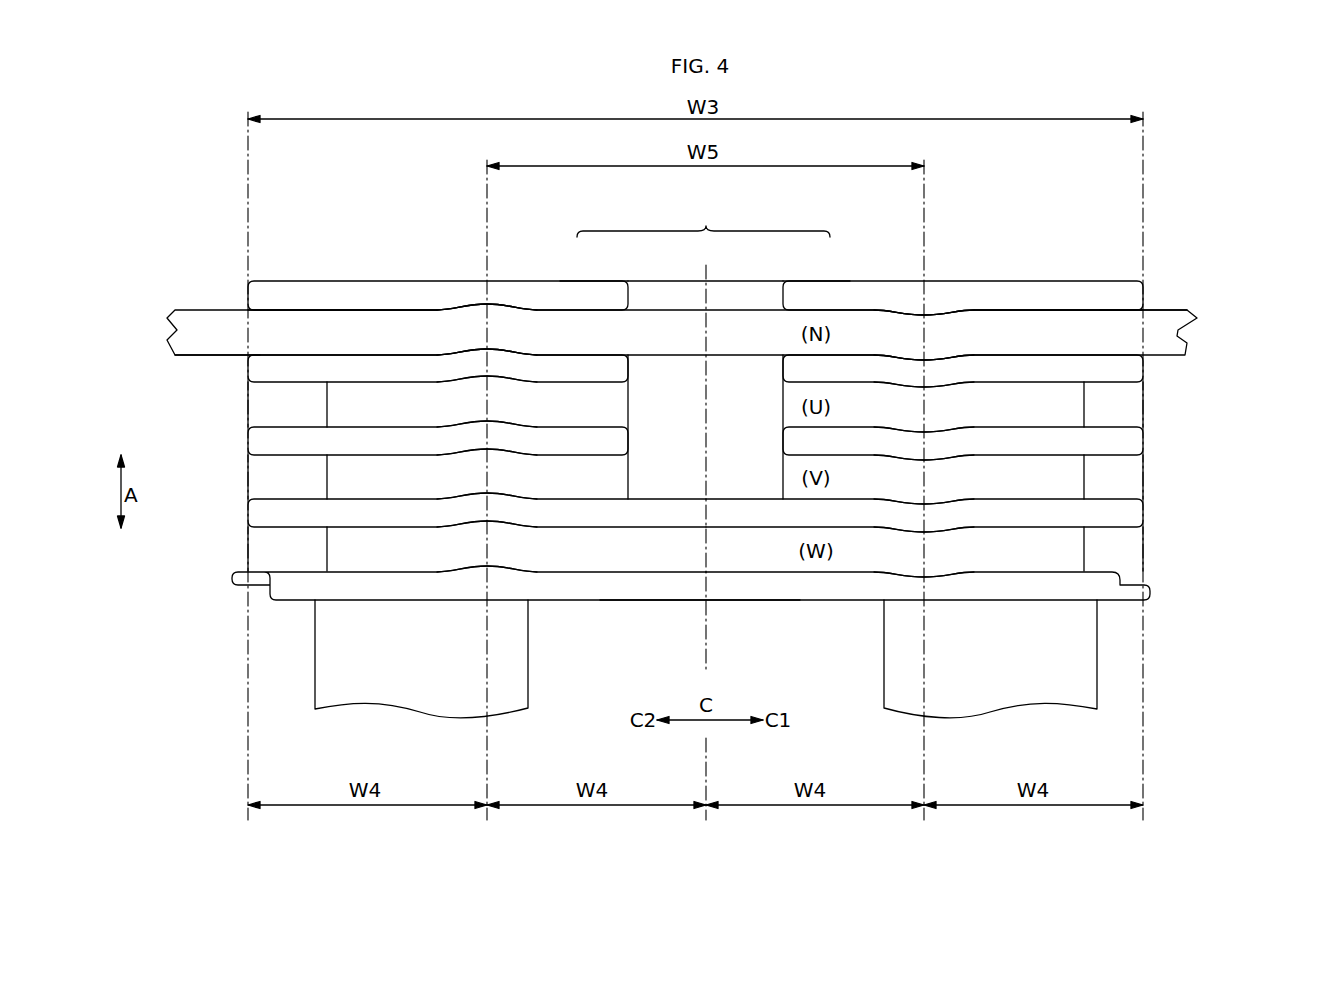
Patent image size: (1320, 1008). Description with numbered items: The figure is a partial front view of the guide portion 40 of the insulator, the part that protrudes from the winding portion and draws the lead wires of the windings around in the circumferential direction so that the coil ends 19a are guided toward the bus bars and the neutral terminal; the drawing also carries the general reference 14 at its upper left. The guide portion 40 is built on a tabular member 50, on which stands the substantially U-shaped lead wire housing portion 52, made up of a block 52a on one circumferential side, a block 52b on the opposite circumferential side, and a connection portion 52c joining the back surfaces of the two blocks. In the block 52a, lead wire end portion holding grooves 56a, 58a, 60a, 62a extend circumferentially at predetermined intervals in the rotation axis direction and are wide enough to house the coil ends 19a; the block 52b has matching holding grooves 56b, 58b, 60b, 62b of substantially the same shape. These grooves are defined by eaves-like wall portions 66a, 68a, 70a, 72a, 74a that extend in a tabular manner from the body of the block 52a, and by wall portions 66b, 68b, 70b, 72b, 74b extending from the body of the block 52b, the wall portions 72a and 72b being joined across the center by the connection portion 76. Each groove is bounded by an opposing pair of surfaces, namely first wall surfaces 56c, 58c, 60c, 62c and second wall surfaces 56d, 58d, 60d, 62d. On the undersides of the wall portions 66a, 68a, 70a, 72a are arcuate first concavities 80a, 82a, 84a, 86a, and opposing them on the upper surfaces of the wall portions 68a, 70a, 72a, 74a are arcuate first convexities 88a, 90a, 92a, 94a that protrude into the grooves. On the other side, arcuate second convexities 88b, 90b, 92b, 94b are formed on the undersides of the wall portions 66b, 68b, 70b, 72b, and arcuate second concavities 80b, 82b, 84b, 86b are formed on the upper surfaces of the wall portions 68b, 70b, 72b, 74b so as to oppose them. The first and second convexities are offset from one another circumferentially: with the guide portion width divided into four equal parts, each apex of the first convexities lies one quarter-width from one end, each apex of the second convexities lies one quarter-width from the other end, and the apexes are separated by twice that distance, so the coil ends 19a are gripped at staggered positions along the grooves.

The power conversion device 14 is at (316, 198).
The guide portion 40 is at (1131, 261).
The coil ends 19a is at (1186, 335).
The tabular member 50 is at (750, 592).
The lead wire housing portion 52 is at (703, 218).
The block 52a is at (598, 290).
The block 52b is at (812, 290).
The connection portion 52c is at (690, 290).
The lead wire end portion holding groove 56a is at (398, 328).
The lead wire end portion holding groove 56b is at (1050, 328).
The first wall surface 56c is at (277, 353).
The second wall surface 56d is at (1118, 312).
The lead wire end portion holding groove 58a is at (332, 405).
The lead wire end portion holding groove 58b is at (1078, 407).
The first wall surface 58c is at (270, 423).
The second wall surface 58d is at (1118, 383).
The lead wire end portion holding groove 60a is at (332, 475).
The lead wire end portion holding groove 60b is at (1078, 475).
The first wall surface 60c is at (262, 498).
The second wall surface 60d is at (1118, 456).
The lead wire end portion holding groove 62a is at (332, 548).
The lead wire end portion holding groove 62b is at (1078, 551).
The first wall surface 62c is at (262, 571).
The second wall surface 62d is at (1118, 528).
The wall portion 66a is at (247, 293).
The wall portion 66b is at (1144, 293).
The wall portion 68a is at (247, 375).
The wall portion 68b is at (1144, 373).
The wall portion 70a is at (247, 438).
The wall portion 70b is at (1144, 440).
The wall portion 72a is at (247, 516).
The wall portion 72b is at (1144, 516).
The wall portion 74a is at (232, 578).
The wall portion 74b is at (1151, 593).
The connection portion 76 is at (663, 515).
The first concavity 80a is at (500, 308).
The second concavity 80b is at (917, 358).
The first concavity 82a is at (497, 380).
The second concavity 82b is at (917, 431).
The first concavity 84a is at (497, 451).
The second concavity 84b is at (917, 503).
The first concavity 86a is at (497, 524).
The second concavity 86b is at (917, 575).
The first convexity 88a is at (488, 349).
The second convexity 88b is at (940, 315).
The first convexity 90a is at (472, 421).
The second convexity 90b is at (940, 386).
The first convexity 92a is at (472, 493).
The second convexity 92b is at (940, 459).
The first convexity 94a is at (472, 565).
The second convexity 94b is at (940, 531).